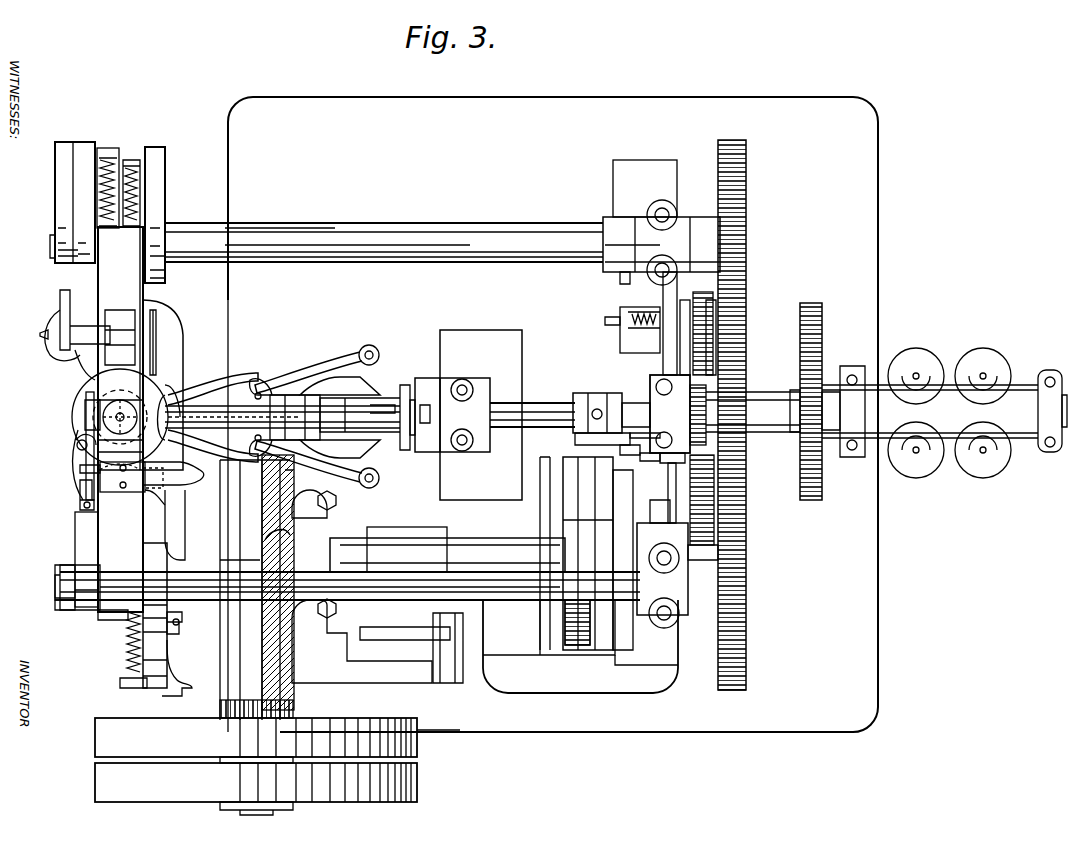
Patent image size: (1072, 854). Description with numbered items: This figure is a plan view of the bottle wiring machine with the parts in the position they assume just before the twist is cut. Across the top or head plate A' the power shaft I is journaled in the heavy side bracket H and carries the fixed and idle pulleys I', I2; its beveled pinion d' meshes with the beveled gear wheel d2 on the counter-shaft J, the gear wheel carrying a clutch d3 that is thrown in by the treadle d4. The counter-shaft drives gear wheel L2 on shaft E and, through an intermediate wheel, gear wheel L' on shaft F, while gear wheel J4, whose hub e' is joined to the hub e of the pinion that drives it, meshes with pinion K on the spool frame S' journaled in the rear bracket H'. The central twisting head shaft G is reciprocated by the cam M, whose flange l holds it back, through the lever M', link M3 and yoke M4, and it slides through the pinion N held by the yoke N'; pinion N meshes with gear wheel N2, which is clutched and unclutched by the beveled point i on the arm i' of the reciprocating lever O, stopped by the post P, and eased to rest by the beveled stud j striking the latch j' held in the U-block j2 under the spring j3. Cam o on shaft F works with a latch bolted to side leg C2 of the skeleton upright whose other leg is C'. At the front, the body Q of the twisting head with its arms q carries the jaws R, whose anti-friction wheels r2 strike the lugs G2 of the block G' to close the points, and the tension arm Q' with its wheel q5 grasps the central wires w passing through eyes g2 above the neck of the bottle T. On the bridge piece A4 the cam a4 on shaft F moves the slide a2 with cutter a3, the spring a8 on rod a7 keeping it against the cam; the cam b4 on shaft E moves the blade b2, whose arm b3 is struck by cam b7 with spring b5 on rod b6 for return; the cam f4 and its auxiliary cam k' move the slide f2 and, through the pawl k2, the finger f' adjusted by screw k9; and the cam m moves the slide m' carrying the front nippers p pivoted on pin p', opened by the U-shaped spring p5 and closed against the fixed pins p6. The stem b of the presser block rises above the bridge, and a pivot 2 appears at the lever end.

The top or head plate A' is at (553, 414).
The shaft F is at (447, 232).
The auxiliary cam k' is at (61, 202).
The cam f4 is at (86, 140).
The rod a7 is at (135, 198).
The coiled spring a8 is at (142, 212).
The cam a4 is at (165, 182).
The front bridge piece A4 is at (120, 419).
The slide f2 is at (140, 287).
The slide a2 is at (148, 298).
The cutter a3 is at (157, 344).
The screw k9 is at (42, 338).
The finger f' is at (68, 365).
The stem b is at (120, 419).
The eyes g2 is at (175, 412).
The bottle T is at (80, 403).
The front nippers p is at (70, 446).
The pin p' is at (70, 465).
The U-shaped spring p5 is at (80, 468).
The fixed pins p6 is at (98, 474).
The blade b2 is at (150, 510).
The beveled pinion d' is at (180, 476).
The arm b3 is at (185, 525).
The cam m is at (71, 561).
The cam b4 is at (155, 615).
The spring b5 is at (127, 652).
The rod b6 is at (173, 621).
The cam b7 is at (185, 662).
The power shaft I is at (248, 590).
The beveled gear wheel d2 is at (268, 510).
The side bracket H is at (264, 706).
The fixed pulley I' is at (277, 740).
The idle pulley I2 is at (256, 789).
The shaft E is at (347, 594).
The central wires w is at (282, 415).
The jaws R is at (208, 407).
The pivot 2 is at (369, 349).
The anti-friction wheels r2 is at (375, 479).
The body of twisting head Q is at (308, 417).
The upper tension arm Q' is at (291, 413).
The arms q is at (295, 417).
The beveled arms or lugs G2 is at (340, 414).
The block G' is at (365, 409).
The anti-friction wheel q5 is at (412, 440).
The side leg C2 is at (468, 415).
The twisting head shaft G is at (532, 405).
The yoke M4 is at (597, 401).
The link M3 is at (614, 424).
The side leg C' is at (645, 414).
The pinion N is at (670, 414).
The pawl k2 is at (736, 417).
The beveled point i is at (672, 468).
The arm i' is at (673, 493).
The post P is at (650, 461).
The lever M' is at (629, 457).
The cam M is at (579, 553).
The slide m' is at (548, 553).
The flange l is at (580, 520).
The counter-shaft J is at (440, 536).
The clutch d3 is at (407, 536).
The treadle d4 is at (377, 586).
The gear wheel L' is at (741, 415).
The gear wheel L2 is at (746, 629).
The cam o is at (620, 280).
The spring j3 is at (620, 318).
The U-block j2 is at (620, 343).
The latch j' is at (644, 333).
The beveled stud j is at (693, 333).
The gear wheel N2 is at (708, 356).
The yoke N' is at (729, 497).
The reciprocating lever O is at (680, 535).
The hub e' is at (796, 401).
The hub e is at (774, 399).
The pinion K is at (930, 411).
The spool frame S' is at (949, 405).
The rear bracket H' is at (1048, 400).
The gear wheel J4 is at (831, 439).